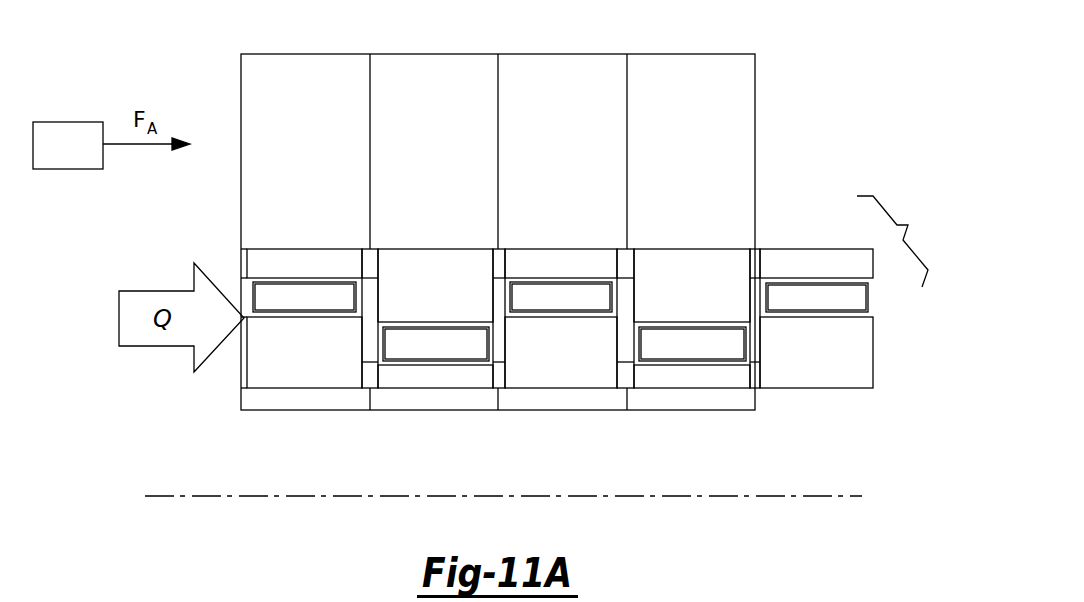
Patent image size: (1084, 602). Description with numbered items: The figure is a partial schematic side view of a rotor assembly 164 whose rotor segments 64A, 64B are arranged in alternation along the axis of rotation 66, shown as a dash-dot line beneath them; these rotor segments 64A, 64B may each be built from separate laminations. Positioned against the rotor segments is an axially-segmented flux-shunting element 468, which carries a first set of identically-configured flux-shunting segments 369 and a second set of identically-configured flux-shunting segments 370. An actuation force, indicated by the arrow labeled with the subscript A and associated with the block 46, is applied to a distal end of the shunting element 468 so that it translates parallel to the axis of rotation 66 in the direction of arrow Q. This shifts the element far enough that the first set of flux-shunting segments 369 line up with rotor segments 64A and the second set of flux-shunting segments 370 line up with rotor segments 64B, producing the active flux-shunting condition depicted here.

The rotor assembly 164 is at (798, 46).
The rotor segment 64A is at (560, 187).
The rotor segment 64B is at (564, 225).
The second set of identically-configured flux-shunting segments 370 is at (435, 248).
The first set of identically-configured flux-shunting segments 369 is at (305, 388).
The power source 46 is at (68, 145).
The axially-segmented flux-shunting element 468 is at (902, 241).
The axis of rotation 66 is at (847, 496).